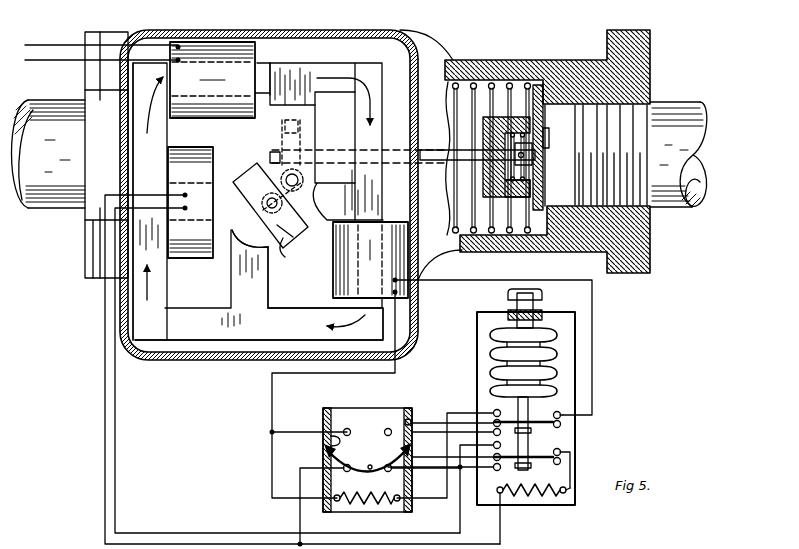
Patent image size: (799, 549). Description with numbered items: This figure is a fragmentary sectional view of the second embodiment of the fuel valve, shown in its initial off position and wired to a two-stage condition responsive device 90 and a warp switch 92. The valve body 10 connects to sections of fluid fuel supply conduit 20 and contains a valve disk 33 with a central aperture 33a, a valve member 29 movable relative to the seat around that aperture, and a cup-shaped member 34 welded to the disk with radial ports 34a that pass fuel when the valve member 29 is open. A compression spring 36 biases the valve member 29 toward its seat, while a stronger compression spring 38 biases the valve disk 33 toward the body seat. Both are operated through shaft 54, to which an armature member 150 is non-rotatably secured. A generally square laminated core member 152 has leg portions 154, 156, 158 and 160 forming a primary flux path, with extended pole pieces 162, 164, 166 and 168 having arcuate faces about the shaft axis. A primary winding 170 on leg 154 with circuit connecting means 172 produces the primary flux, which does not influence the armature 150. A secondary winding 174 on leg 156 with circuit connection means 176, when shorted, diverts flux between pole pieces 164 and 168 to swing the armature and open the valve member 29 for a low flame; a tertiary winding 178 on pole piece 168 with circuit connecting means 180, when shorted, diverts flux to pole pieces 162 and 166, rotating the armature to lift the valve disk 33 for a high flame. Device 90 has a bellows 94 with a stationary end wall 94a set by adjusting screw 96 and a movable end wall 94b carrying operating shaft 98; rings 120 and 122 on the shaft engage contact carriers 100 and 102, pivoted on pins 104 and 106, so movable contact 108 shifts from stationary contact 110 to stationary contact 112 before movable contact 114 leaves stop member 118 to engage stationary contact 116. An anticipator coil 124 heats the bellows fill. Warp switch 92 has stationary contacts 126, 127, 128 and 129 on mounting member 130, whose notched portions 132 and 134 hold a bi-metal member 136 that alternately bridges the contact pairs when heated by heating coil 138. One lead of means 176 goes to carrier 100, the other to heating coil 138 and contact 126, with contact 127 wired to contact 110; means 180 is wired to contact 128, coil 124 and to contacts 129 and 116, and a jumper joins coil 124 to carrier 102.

The valve body 10 is at (640, 240).
The fluid fuel supply conduit 20 is at (686, 110).
The valve member 29 is at (533, 155).
The valve disk 33 is at (541, 85).
The central aperture 33a is at (543, 142).
The cup-shaped member 34 is at (483, 190).
The radial ports 34a is at (517, 190).
The compression spring 36 is at (527, 120).
The compression spring 38 is at (477, 88).
The shaft 54 is at (267, 218).
The temperature responsive device 90 is at (580, 488).
The warp switch 92 is at (374, 406).
The bellows 94 is at (553, 353).
The stationary end wall 94a is at (548, 331).
The movable end wall 94b is at (548, 402).
The adjusting screw 96 is at (508, 295).
The operating shaft 98 is at (529, 445).
The movable contact carrier 100 is at (562, 425).
The movable contact carrier 102 is at (562, 461).
The pin 104 is at (565, 417).
The pin 106 is at (571, 453).
The movable contact 108 is at (492, 420).
The stationary contact 110 is at (492, 431).
The stationary contact 112 is at (493, 410).
The movable contact 114 is at (492, 457).
The stationary contact 116 is at (492, 445).
The stop member 118 is at (492, 468).
The ring 120 is at (531, 433).
The ring 122 is at (531, 466).
The anticipator coil 124 is at (528, 493).
The stationary contact 126 is at (344, 428).
The stationary contact 127 is at (391, 428).
The stationary contact 128 is at (347, 472).
The stationary contact 129 is at (392, 473).
The mounting member 130 is at (360, 420).
The notched portion 132 is at (325, 440).
The notched portion 134 is at (410, 419).
The bi-metal member 136 is at (370, 465).
The heating coil 138 is at (368, 507).
The armature member 150 is at (285, 244).
The core member 152 is at (322, 73).
The leg portion 154 is at (270, 75).
The leg portion 156 is at (370, 138).
The leg portion 158 is at (272, 332).
The leg portion 160 is at (165, 275).
The pole piece 162 is at (306, 143).
The pole piece 164 is at (291, 233).
The pole piece 166 is at (247, 267).
The pole piece 168 is at (220, 190).
The primary winding 170 is at (222, 53).
The circuit connecting means 172 is at (62, 50).
The secondary winding 174 is at (342, 273).
The circuit connection means 176 is at (443, 283).
The tertiary winding 178 is at (213, 258).
The circuit connecting means 180 is at (157, 202).